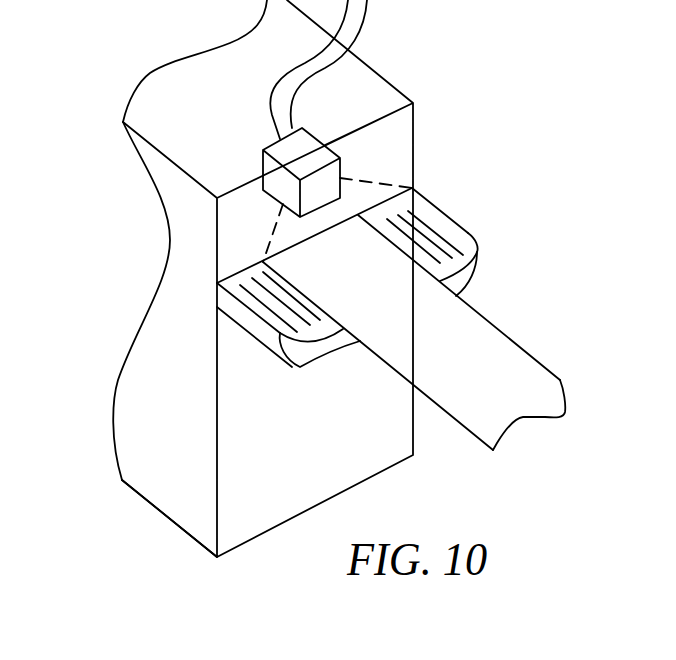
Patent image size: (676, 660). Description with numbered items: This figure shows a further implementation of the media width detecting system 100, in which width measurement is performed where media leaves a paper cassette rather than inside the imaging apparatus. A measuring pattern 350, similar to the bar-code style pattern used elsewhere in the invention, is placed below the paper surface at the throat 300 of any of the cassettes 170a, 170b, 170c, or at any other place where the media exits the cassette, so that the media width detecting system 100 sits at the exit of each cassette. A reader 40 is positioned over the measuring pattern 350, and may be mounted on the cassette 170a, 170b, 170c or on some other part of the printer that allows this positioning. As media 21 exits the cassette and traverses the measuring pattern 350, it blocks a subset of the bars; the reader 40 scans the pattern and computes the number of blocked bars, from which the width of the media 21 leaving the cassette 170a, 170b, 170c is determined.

The media width detecting system 100 is at (458, 191).
The cassette 170a is at (161, 455).
The cassette 170b is at (150, 276).
The cassette 170c is at (125, 530).
The reader 40 is at (263, 165).
The throat 300 is at (330, 350).
The measuring pattern 350 is at (292, 360).
The media 21 is at (510, 403).